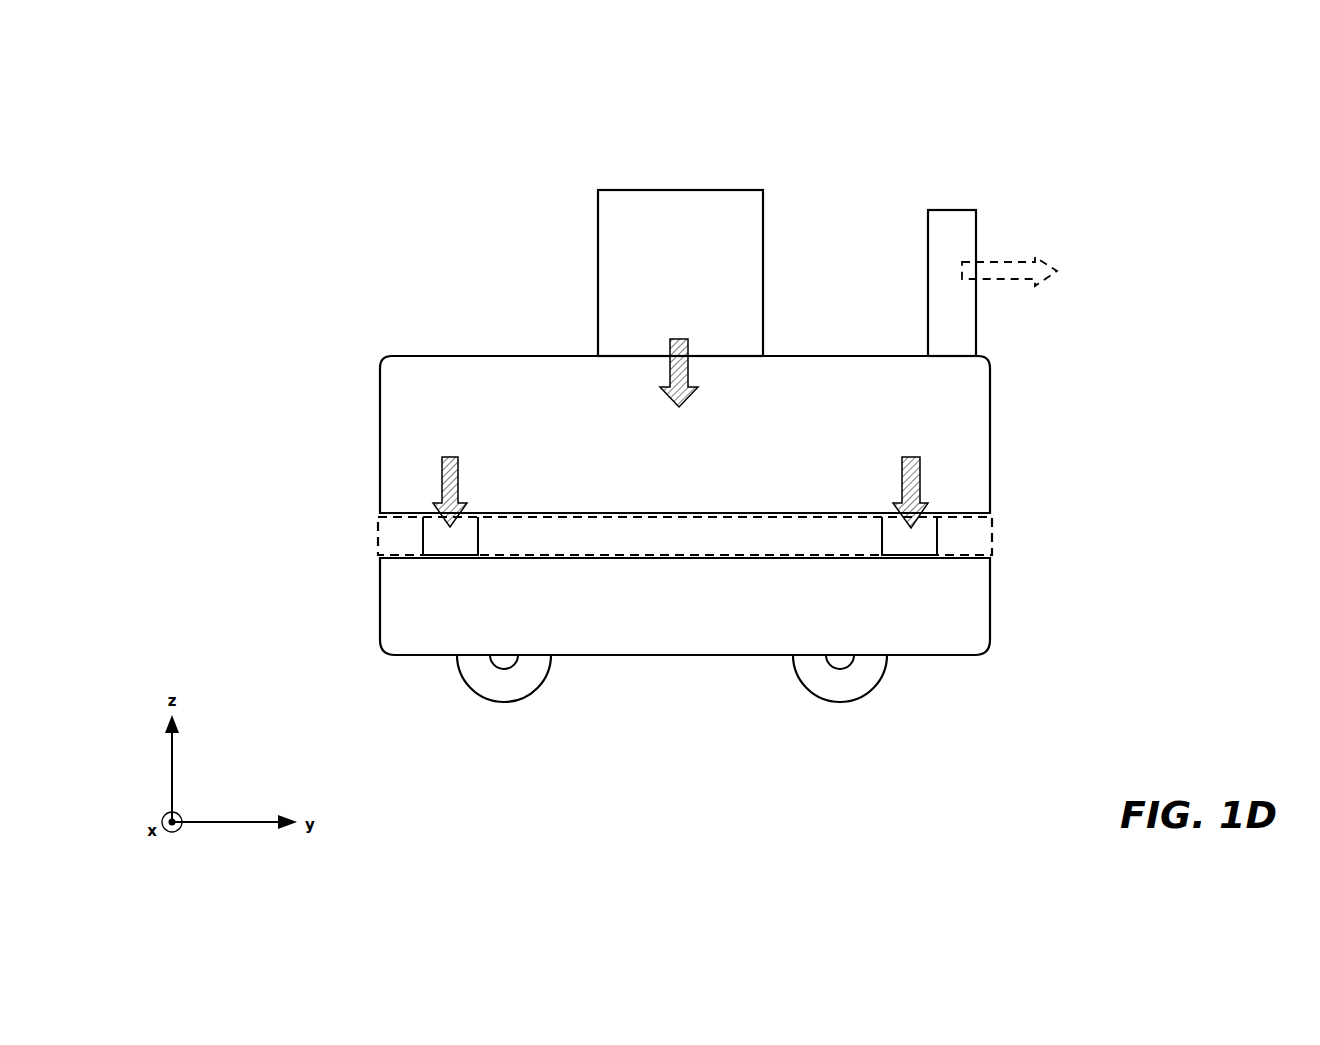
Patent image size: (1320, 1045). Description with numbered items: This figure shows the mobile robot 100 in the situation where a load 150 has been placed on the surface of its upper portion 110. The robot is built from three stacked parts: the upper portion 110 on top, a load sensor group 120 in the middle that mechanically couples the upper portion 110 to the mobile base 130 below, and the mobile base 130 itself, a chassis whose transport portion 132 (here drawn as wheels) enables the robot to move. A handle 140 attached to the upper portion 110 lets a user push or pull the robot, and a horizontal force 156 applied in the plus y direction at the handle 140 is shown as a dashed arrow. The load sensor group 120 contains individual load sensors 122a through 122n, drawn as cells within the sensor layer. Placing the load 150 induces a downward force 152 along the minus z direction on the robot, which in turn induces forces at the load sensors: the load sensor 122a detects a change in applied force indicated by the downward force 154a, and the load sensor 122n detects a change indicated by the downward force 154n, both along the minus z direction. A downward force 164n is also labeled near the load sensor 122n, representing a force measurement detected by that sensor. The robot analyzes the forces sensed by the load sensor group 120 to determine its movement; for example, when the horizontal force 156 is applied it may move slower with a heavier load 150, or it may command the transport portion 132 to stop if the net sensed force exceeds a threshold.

The mobile robot 100 is at (218, 68).
The upper portion 110 is at (685, 434).
The load sensor group 120 is at (392, 532).
The load sensor 122a is at (470, 540).
The load sensor 122n is at (885, 530).
The mobile base 130 is at (685, 606).
The transport portion 132 is at (498, 690).
The handle 140 is at (941, 210).
The load 150 is at (612, 196).
The downward force 152 is at (668, 400).
The downward force 154a is at (455, 466).
The downward force 154n is at (913, 464).
The horizontal force 156 is at (1035, 258).
The downward force 164n is at (908, 610).